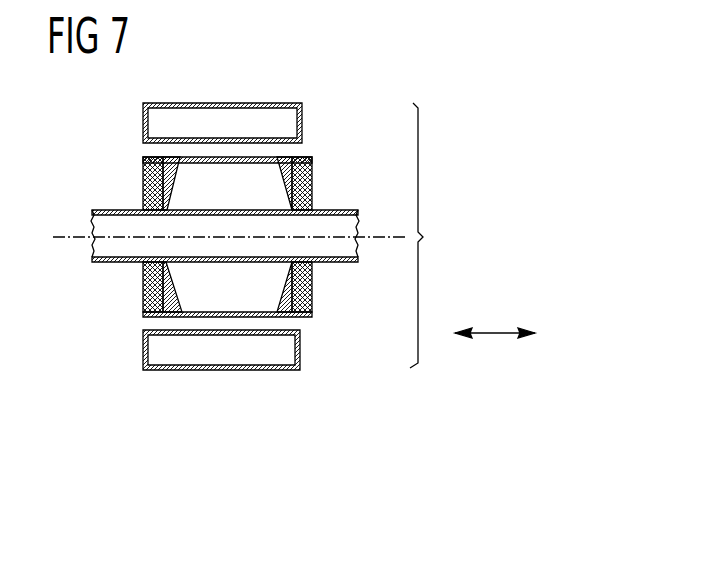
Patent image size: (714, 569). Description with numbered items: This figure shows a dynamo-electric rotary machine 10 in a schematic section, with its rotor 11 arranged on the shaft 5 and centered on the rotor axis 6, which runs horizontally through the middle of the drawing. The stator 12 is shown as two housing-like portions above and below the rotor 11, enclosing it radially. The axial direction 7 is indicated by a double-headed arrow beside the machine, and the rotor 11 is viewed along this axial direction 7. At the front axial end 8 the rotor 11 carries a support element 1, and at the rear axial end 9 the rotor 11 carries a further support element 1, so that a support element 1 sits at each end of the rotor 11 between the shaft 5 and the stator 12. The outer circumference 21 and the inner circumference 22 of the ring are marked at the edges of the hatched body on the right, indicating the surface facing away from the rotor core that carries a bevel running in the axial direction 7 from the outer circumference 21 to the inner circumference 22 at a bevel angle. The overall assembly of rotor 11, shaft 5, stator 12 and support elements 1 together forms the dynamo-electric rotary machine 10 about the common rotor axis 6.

The support element 1 is at (315, 176).
The shaft 5 is at (352, 250).
The rotor axis 6 is at (70, 237).
The axial direction 7 is at (495, 338).
The front axial end 8 is at (143, 371).
The rear axial end 9 is at (291, 371).
The dynamo-electric rotary machine 10 is at (435, 235).
The rotor 11 is at (143, 177).
The stator 12 is at (143, 125).
The outer circumference 21 is at (318, 153).
The inner circumference 22 is at (318, 210).